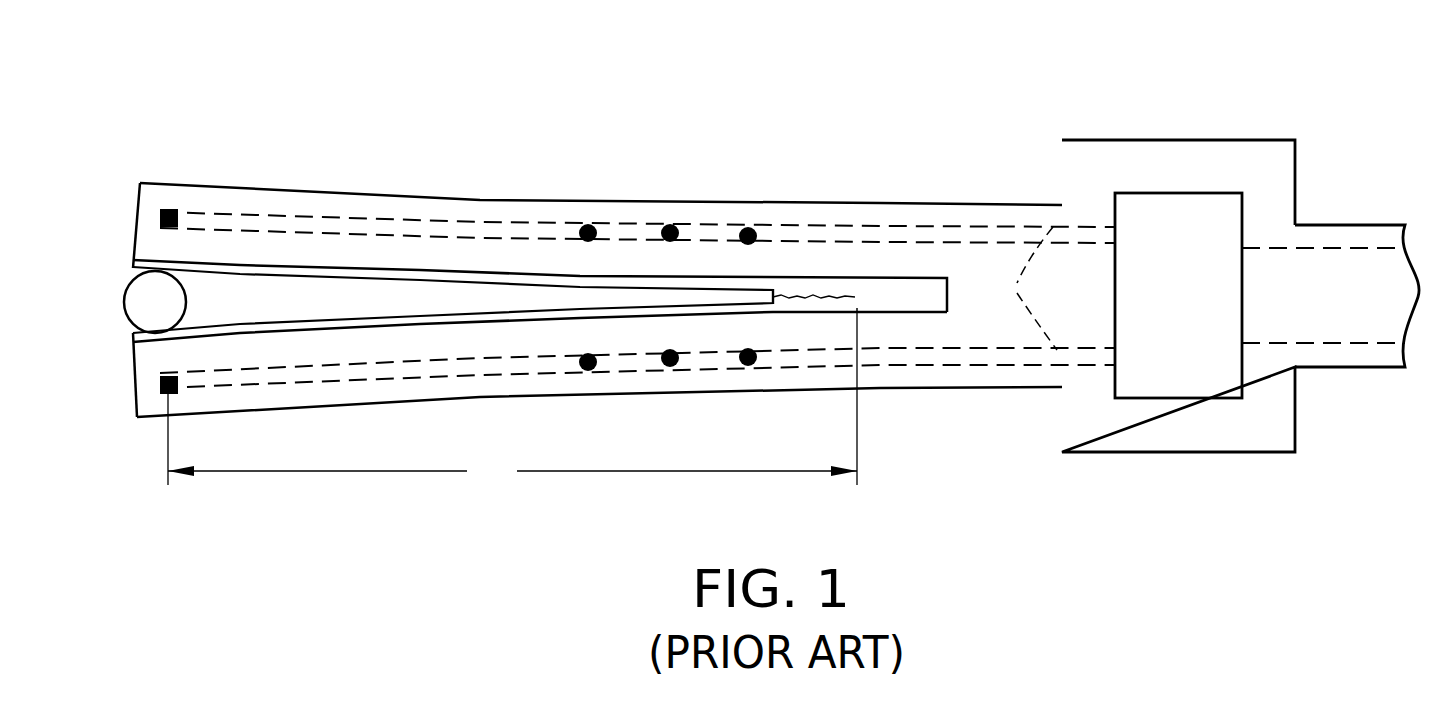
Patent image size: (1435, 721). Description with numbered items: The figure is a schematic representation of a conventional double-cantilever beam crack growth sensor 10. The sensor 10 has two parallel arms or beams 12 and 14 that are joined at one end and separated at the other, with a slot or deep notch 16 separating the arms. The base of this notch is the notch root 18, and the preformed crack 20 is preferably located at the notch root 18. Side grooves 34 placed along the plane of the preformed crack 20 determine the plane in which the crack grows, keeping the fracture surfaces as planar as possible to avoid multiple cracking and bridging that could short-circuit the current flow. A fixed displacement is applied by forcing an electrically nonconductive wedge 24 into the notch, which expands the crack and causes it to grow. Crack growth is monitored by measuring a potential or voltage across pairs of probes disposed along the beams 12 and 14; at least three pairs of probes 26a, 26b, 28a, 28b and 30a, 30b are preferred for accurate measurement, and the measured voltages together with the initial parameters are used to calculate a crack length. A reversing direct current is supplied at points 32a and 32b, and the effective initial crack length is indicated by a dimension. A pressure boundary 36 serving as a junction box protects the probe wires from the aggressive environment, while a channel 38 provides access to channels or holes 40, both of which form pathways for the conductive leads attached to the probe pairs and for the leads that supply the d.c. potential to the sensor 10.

The sensor 10 is at (322, 112).
The arm 12 is at (133, 238).
The arm 14 is at (133, 355).
The slot or deep notch 16 is at (268, 298).
The notch root 18 is at (776, 300).
The preformed crack 20 is at (853, 296).
The wedge 24 is at (122, 290).
The probe 26a is at (588, 225).
The probe 28a is at (670, 225).
The probe 30a is at (748, 228).
The probe 26b is at (588, 371).
The probe 28b is at (670, 367).
The probe 30b is at (748, 366).
The current supply point 32a is at (170, 210).
The current supply point 32b is at (160, 383).
The side grooves 34 is at (402, 320).
The pressure boundary 36 is at (1152, 140).
The channel 38 is at (1307, 343).
The channels or holes 40 is at (1013, 285).